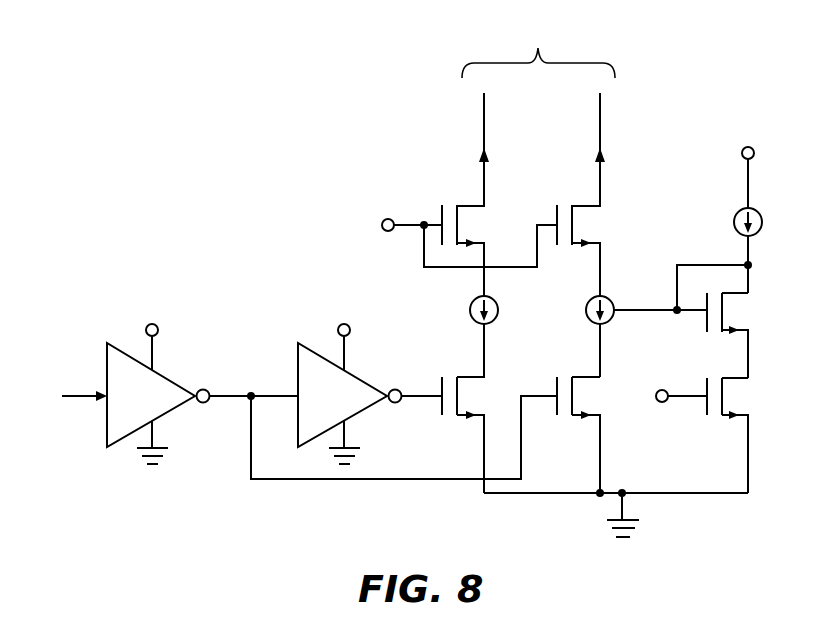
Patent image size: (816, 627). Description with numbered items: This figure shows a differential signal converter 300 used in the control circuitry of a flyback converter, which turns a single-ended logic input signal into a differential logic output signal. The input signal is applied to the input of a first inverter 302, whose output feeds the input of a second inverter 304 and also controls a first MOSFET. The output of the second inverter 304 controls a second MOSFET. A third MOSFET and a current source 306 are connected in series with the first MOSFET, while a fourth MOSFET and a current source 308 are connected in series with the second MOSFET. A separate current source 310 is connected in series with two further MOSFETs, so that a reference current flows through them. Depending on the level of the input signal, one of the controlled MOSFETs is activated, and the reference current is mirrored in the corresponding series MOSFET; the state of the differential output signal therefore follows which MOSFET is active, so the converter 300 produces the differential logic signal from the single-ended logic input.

The differential signal converter 300 is at (249, 121).
The first inverter 302 is at (173, 378).
The second inverter 304 is at (364, 378).
The current source 306 is at (610, 299).
The current source 308 is at (498, 306).
The current source 310 is at (761, 211).